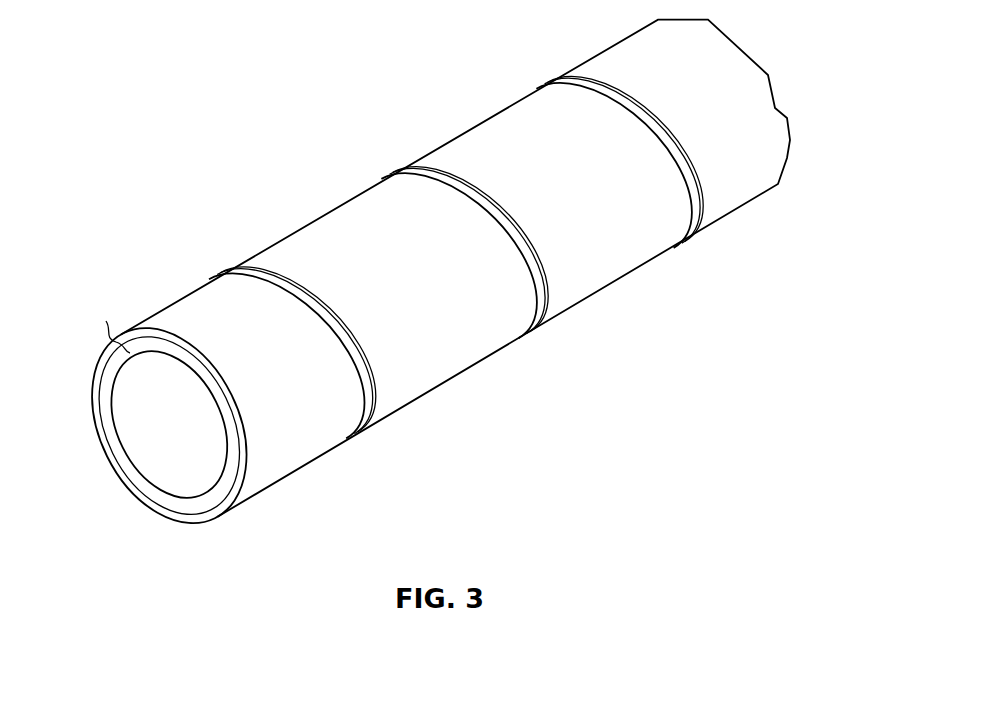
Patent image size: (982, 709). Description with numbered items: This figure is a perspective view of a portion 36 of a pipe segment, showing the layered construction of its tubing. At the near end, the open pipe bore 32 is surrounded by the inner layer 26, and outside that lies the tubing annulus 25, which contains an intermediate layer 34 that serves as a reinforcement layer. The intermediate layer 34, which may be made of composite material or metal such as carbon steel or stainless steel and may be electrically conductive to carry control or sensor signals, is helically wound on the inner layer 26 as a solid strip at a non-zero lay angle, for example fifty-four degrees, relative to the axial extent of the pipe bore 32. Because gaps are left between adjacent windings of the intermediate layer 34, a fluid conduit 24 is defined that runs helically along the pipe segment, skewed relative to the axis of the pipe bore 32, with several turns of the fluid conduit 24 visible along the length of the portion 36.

The portion of pipe segment 36 is at (100, 217).
The intermediate layer 34 is at (274, 358).
The fluid conduit 24 is at (301, 303).
The tubing annulus 25 is at (113, 338).
The inner layer 26 is at (170, 497).
The pipe bore 32 is at (153, 432).